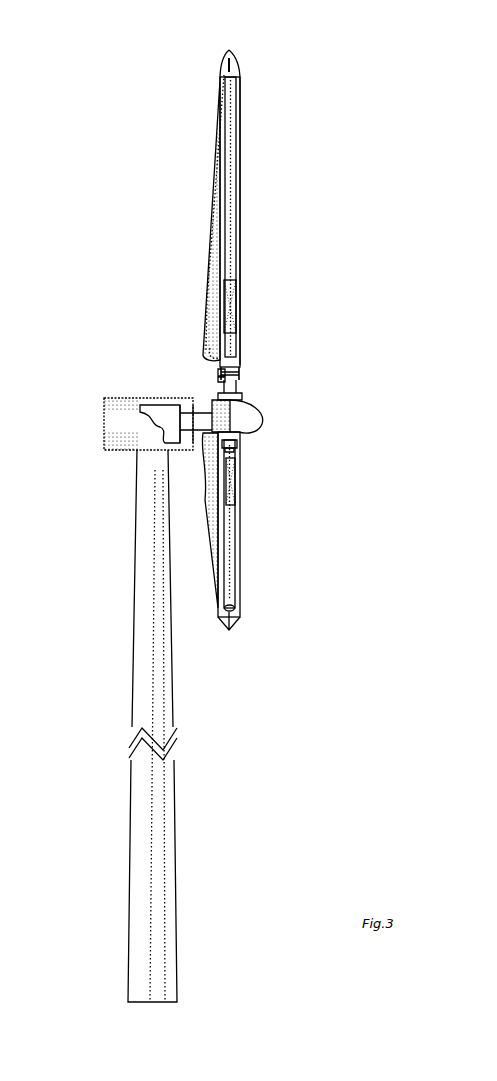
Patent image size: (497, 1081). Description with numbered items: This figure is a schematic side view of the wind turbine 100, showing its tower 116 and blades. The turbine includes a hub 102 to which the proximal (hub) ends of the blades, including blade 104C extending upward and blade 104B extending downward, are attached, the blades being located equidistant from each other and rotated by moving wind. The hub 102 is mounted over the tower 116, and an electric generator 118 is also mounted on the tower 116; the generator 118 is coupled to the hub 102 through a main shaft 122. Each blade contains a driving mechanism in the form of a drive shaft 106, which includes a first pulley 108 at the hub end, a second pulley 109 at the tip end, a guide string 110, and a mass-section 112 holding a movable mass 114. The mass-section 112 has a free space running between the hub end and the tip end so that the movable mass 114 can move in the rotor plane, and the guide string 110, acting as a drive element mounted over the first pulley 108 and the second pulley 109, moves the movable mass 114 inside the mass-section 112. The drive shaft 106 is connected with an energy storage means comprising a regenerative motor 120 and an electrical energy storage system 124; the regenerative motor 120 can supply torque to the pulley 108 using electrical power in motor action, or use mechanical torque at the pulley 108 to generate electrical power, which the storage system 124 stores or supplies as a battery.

The wind turbine 100 is at (396, 418).
The hub 102 is at (250, 426).
The blade 104B is at (218, 530).
The blade 104C is at (213, 295).
The drive shaft 106 is at (241, 372).
The first pulley 108 is at (245, 388).
The second pulley 109 is at (238, 64).
The guide string 110 is at (232, 222).
The mass-section 112 is at (243, 179).
The movable mass 114 is at (238, 305).
The tower 116 is at (156, 706).
The electric generator 118 is at (160, 424).
The regenerative motor 120 is at (222, 370).
The main shaft 122 is at (186, 411).
The electrical energy storage system 124 is at (222, 379).